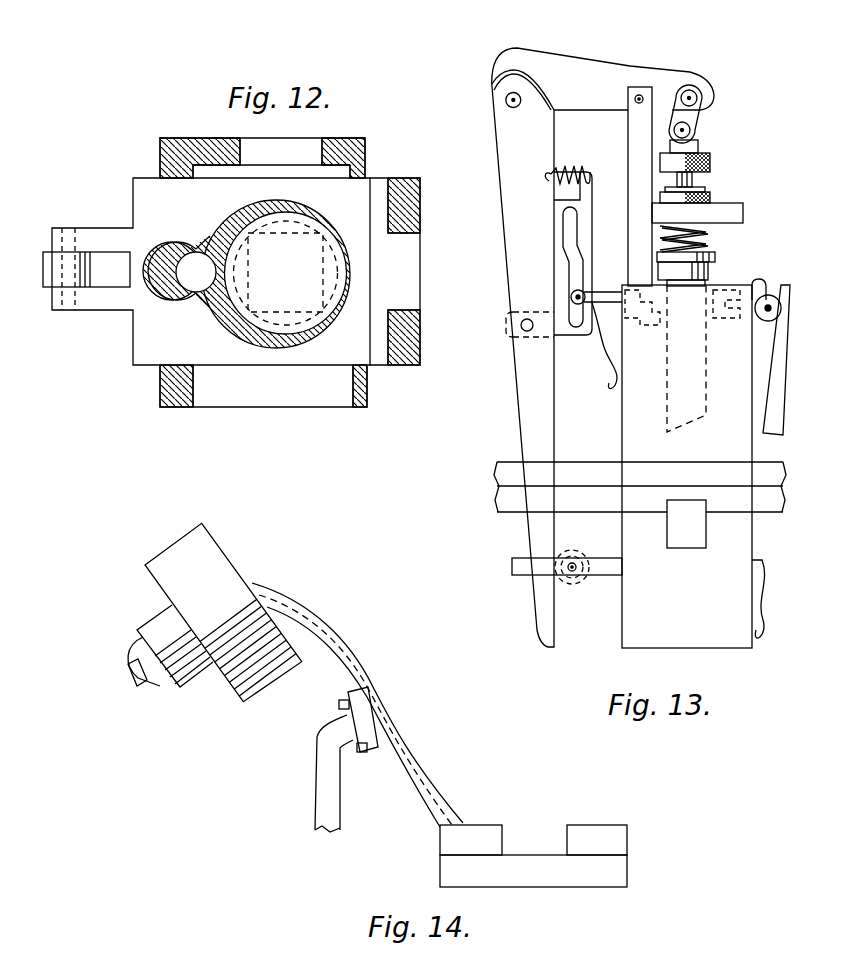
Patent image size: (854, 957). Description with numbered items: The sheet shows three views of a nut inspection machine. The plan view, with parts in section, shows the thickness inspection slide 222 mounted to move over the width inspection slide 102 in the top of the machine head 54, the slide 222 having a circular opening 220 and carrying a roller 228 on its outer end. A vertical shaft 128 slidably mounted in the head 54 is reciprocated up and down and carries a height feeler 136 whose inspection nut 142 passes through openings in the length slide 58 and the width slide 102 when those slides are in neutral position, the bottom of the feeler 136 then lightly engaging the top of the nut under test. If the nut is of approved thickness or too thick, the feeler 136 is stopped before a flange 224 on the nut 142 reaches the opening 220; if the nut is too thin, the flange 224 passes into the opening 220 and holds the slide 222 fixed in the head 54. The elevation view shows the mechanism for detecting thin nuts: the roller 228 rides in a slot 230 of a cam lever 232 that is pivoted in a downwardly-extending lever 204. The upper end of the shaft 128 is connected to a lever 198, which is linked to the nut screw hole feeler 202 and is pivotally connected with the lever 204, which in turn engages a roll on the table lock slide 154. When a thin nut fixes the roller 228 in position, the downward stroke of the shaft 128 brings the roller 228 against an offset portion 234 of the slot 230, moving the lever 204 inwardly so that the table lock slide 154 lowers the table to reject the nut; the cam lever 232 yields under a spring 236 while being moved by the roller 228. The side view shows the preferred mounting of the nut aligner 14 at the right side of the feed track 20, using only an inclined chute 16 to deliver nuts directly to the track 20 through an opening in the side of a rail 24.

In FIG. 14, the nut aligner 14 is at (213, 560).
In FIG. 14, the inclined chute 16 is at (367, 663).
In FIG. 14, the feed track 20 is at (520, 845).
In FIG. 14, the rail 24 is at (450, 843).
In FIG. 13, the machine head 54 is at (640, 466).
In FIG. 13, the slide 58 is at (644, 315).
In FIG. 13, the slide 102 is at (718, 312).
In FIG. 12, the vertical shaft 128 is at (196, 272).
In FIG. 13, the vertical shaft 128 is at (628, 127).
In FIG. 13, the height feeler 136 is at (677, 382).
In FIG. 12, the nut 142 is at (213, 232).
In FIG. 13, the nut 142 is at (708, 270).
In FIG. 13, the table lock slide 154 is at (597, 568).
In FIG. 13, the lever 198 is at (647, 73).
In FIG. 13, the nut screw hole feeler 202 is at (690, 178).
In FIG. 13, the lever 204 is at (505, 110).
In FIG. 12, the circular opening 220 is at (317, 223).
In FIG. 13, the circular opening 220 is at (742, 287).
In FIG. 12, the slide 222 is at (132, 197).
In FIG. 13, the slide 222 is at (622, 287).
In FIG. 12, the flange 224 is at (230, 313).
In FIG. 13, the flange 224 is at (717, 255).
In FIG. 12, the roller 228 is at (78, 263).
In FIG. 13, the roller 228 is at (580, 290).
In FIG. 13, the slot 230 is at (592, 346).
In FIG. 13, the cam lever 232 is at (587, 212).
In FIG. 13, the offset portion 234 is at (577, 252).
In FIG. 13, the spring 236 is at (565, 168).